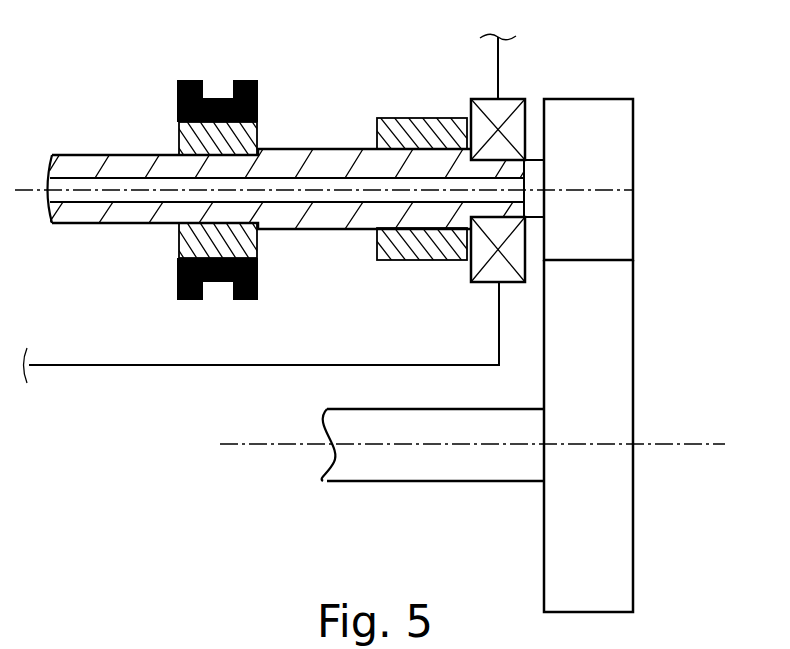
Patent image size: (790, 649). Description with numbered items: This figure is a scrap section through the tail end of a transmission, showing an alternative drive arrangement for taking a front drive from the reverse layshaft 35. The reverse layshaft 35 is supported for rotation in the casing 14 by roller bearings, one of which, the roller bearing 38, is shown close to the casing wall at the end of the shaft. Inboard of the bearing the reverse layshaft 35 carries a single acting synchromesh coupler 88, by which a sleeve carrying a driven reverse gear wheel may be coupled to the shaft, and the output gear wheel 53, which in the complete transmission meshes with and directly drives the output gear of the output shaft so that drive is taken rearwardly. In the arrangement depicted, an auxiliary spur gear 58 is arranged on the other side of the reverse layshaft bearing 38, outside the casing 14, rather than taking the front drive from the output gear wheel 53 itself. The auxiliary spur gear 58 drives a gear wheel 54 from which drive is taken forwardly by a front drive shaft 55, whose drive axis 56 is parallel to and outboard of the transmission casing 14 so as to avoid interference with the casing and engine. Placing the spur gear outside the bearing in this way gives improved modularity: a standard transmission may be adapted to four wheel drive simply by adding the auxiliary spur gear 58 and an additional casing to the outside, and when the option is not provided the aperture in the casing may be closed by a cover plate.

The casing 14 is at (498, 72).
The reverse layshaft 35 is at (80, 178).
The roller bearing 38 is at (515, 120).
The output gear wheel 53 is at (412, 118).
The gear wheel 54 is at (617, 552).
The front drive shaft 55 is at (397, 472).
The drive axis 56 is at (658, 445).
The auxiliary spur gear 58 is at (613, 142).
The single acting synchromesh coupler 88 is at (217, 95).